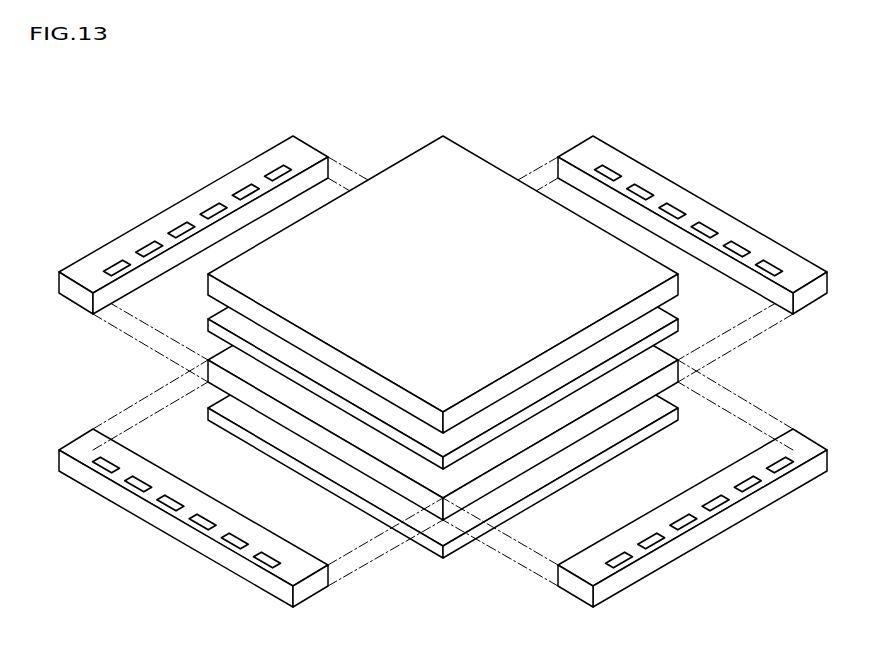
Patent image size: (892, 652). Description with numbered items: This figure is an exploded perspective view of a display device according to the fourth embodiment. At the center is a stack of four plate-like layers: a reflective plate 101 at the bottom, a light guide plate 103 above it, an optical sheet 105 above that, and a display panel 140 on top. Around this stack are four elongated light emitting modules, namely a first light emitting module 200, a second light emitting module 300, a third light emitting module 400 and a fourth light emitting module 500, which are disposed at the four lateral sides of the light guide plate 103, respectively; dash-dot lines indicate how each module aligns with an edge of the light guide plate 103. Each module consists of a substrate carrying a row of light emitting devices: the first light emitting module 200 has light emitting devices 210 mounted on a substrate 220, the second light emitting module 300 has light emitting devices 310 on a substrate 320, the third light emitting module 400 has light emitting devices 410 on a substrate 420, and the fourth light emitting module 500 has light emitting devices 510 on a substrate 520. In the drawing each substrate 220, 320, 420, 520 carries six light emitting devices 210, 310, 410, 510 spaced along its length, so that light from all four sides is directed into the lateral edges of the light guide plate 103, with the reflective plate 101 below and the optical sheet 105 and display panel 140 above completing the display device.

The reflective plate 101 is at (208, 417).
The light guide plate 103 is at (208, 372).
The optical sheet 105 is at (208, 328).
The display panel 140 is at (208, 284).
The first light emitting module 200 is at (680, 239).
The light emitting device 210 is at (770, 262).
The substrate 220 is at (808, 271).
The second light emitting module 300 is at (640, 501).
The light emitting device 310 is at (783, 469).
The substrate 320 is at (733, 514).
The third light emitting module 400 is at (248, 501).
The light emitting device 410 is at (105, 471).
The substrate 420 is at (153, 514).
The fourth light emitting module 500 is at (207, 239).
The light emitting device 510 is at (117, 262).
The substrate 520 is at (80, 271).